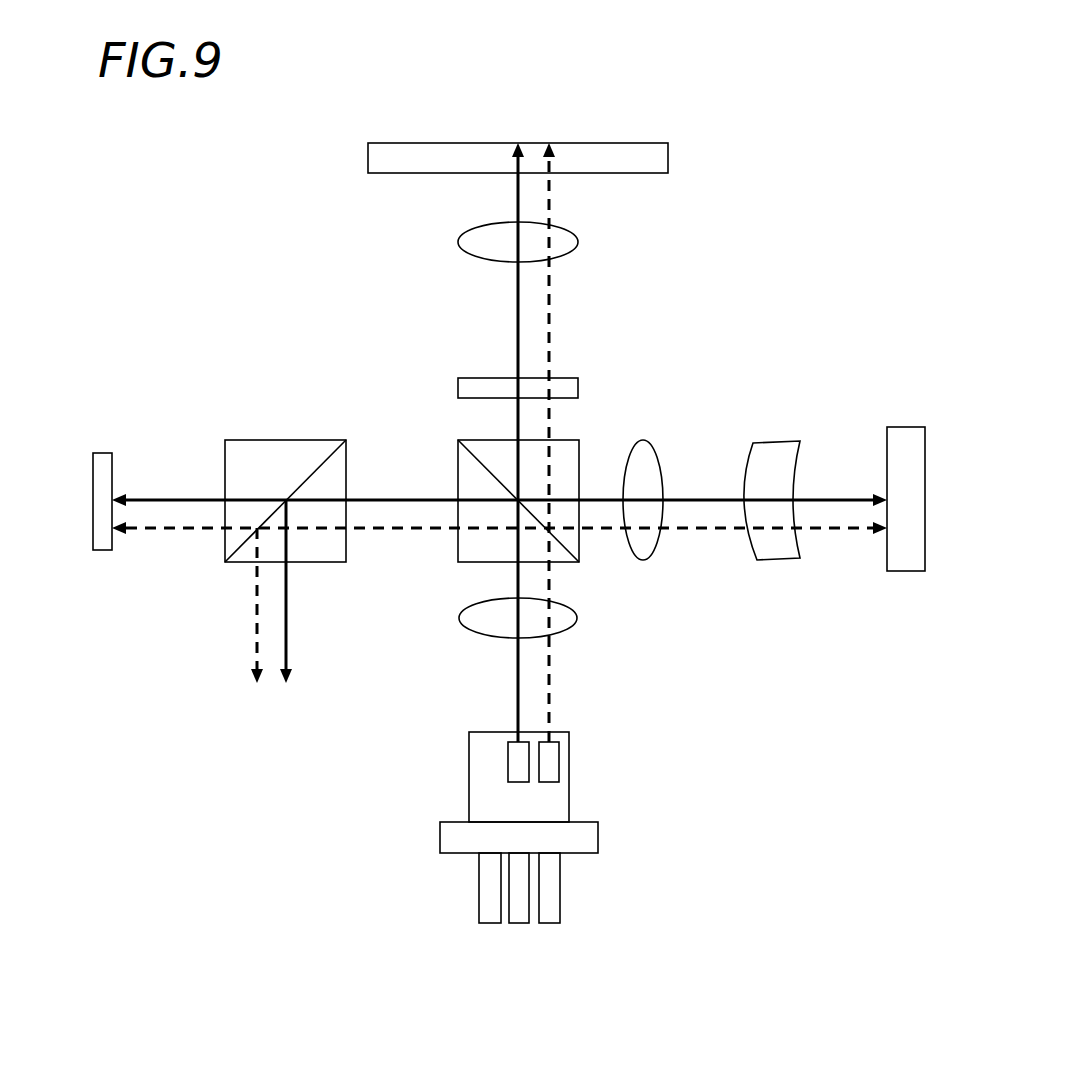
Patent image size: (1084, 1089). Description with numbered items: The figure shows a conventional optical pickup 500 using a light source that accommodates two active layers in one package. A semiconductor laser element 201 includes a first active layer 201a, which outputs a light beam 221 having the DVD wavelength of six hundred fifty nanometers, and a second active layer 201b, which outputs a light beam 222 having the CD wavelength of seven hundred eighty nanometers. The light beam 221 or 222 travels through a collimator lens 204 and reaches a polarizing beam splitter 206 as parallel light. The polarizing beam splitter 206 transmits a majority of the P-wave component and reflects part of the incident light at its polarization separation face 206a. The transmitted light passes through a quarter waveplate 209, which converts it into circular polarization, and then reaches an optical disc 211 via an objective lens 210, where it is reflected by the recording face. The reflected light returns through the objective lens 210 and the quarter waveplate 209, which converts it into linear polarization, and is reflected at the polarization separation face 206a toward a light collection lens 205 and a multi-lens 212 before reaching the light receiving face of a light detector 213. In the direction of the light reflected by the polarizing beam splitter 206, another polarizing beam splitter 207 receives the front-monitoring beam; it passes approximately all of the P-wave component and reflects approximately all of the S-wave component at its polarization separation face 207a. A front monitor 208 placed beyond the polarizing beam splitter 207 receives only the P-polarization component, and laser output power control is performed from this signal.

The optical pickup 500 is at (797, 60).
The semiconductor laser element 201 is at (469, 778).
The first active layer 201a is at (508, 762).
The second active layer 201b is at (560, 762).
The collimator lens 204 is at (578, 618).
The light collection lens 205 is at (643, 440).
The polarizing beam splitter 206 is at (458, 543).
The polarization separation face 206a is at (480, 463).
The polarizing beam splitter 207 is at (242, 440).
The polarization separation face 207a is at (331, 454).
The front monitor 208 is at (97, 550).
The 1/4 waveplate 209 is at (458, 389).
The objective lens 210 is at (457, 243).
The optical disc 211 is at (668, 157).
The multi-lens 212 is at (775, 442).
The light detector 213 is at (905, 427).
The light beam 221 is at (516, 668).
The light beam 222 is at (551, 712).